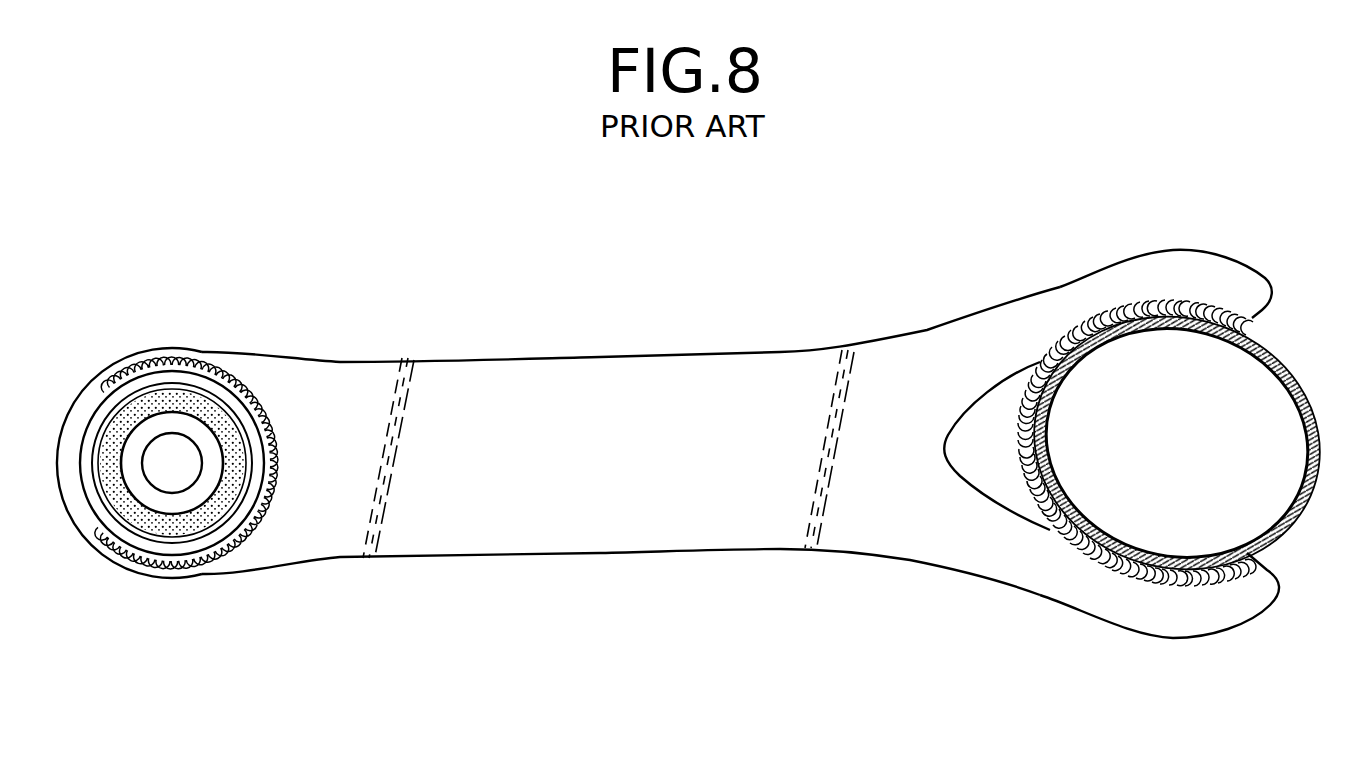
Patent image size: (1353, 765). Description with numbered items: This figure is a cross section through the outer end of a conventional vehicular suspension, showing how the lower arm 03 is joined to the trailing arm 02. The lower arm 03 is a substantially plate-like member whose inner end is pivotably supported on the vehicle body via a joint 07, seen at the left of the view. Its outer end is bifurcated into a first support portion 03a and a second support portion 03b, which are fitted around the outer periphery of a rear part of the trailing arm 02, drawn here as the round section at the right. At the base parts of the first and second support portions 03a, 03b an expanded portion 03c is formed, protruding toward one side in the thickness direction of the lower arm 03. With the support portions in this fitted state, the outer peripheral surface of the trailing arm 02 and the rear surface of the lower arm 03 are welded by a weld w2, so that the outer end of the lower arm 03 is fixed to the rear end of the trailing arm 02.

The lower arm 03 is at (638, 345).
The first support portion 03a is at (1200, 270).
The second support portion 03b is at (1242, 600).
The expanded portion 03c is at (973, 458).
The trailing arm 02 is at (1315, 382).
The joint 07 is at (79, 397).
The weld w2 is at (1098, 317).